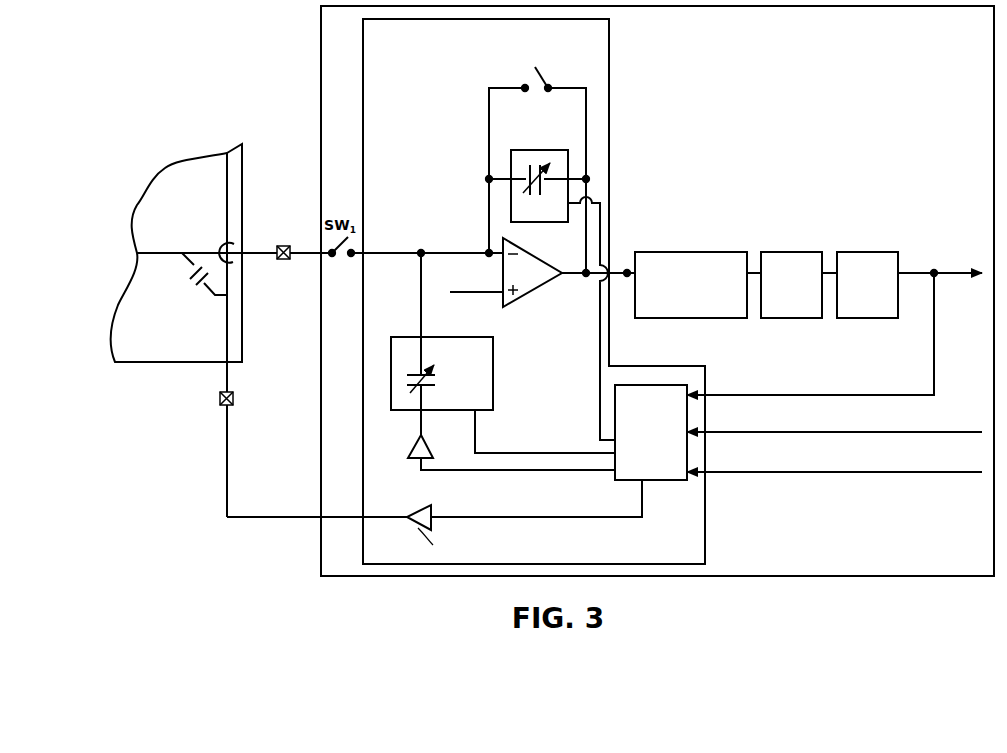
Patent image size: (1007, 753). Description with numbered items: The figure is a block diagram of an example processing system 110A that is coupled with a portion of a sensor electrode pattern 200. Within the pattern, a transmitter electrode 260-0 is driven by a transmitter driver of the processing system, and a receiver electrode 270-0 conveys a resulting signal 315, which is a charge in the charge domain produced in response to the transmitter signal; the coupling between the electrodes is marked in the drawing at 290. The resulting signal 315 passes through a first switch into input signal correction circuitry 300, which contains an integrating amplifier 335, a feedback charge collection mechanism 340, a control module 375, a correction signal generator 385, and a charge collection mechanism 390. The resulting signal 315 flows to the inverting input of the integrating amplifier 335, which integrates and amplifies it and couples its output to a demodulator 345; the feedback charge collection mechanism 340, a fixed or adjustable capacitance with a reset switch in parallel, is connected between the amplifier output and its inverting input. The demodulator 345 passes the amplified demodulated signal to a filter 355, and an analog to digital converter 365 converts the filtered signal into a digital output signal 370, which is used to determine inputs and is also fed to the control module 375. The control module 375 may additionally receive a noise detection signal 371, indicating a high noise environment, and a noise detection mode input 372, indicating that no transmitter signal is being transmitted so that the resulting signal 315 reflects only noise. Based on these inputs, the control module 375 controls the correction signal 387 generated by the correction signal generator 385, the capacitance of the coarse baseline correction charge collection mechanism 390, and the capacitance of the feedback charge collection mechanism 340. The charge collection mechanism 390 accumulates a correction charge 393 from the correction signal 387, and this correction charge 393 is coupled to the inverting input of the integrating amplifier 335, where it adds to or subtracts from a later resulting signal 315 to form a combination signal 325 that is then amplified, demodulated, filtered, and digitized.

The processing system 110A is at (750, 109).
The input signal correction circuitry 300 is at (403, 128).
The sensor electrode pattern 200 is at (174, 363).
The transmitter electrode 260-0 is at (227, 333).
The receiver electrode 270-0 is at (192, 252).
The touch capacitance node 290 is at (235, 262).
The resulting signal 315 is at (262, 252).
The combination signal 325 is at (420, 252).
The correction charge 393 is at (420, 300).
The charge collection mechanism 390 is at (493, 394).
The correction signal 387 is at (421, 420).
The correction signal generator 385 is at (410, 440).
The integrating amplifier 335 is at (522, 297).
The feedback charge collection mechanism 340 is at (527, 150).
The control module 375 is at (637, 460).
The demodulator 345 is at (677, 303).
The filter 355 is at (777, 303).
The analog to digital converter 365 is at (853, 303).
The output signal 370 is at (834, 333).
The noise detection signal 371 is at (834, 423).
The noise detection mode input 372 is at (834, 462).